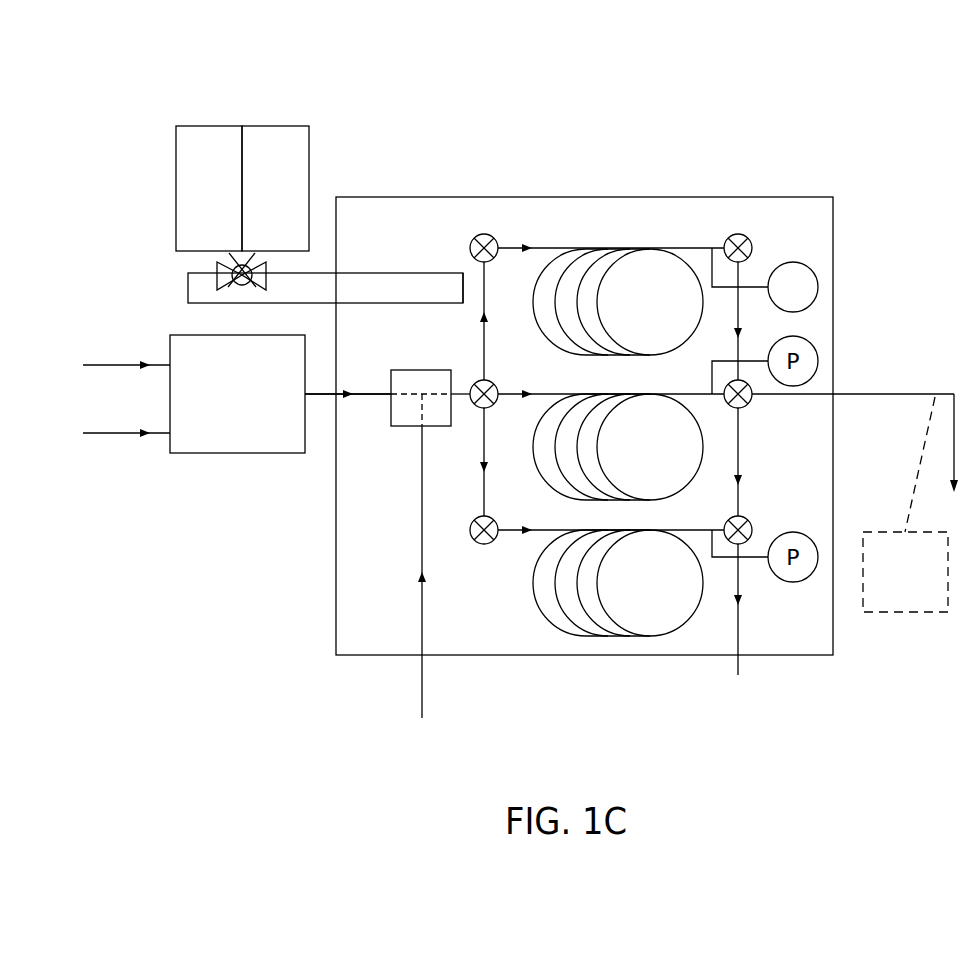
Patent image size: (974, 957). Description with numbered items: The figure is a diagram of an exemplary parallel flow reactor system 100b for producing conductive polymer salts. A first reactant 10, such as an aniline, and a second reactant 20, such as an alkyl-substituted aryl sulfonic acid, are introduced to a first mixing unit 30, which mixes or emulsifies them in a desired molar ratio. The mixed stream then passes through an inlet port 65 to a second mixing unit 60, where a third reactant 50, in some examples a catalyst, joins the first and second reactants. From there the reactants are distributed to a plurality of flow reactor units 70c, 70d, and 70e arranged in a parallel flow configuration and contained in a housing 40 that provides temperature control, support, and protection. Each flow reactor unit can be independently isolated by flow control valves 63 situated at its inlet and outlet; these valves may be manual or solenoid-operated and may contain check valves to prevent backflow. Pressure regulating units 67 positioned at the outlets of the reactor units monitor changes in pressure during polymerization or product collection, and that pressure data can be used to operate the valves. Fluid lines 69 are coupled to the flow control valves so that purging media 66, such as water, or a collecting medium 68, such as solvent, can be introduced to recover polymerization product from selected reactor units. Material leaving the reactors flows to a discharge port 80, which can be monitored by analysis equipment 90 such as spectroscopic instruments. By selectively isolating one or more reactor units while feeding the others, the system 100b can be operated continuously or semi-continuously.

The first reactant 10 is at (109, 363).
The second reactant 20 is at (110, 440).
The first mixing unit 30 is at (225, 405).
The housing 40 is at (400, 248).
The third reactant 50 is at (422, 690).
The second mixing unit 60 is at (411, 370).
The flow control valves 63 is at (477, 410).
The inlet port 65 is at (380, 398).
The purging media 66 is at (197, 195).
The pressure regulating unit 67 is at (788, 262).
The collecting medium 68 is at (262, 195).
The fluid lines 69 is at (461, 343).
The flow reactor unit 70c is at (680, 622).
The flow reactor unit 70d is at (670, 498).
The flow reactor unit 70e is at (652, 356).
The discharge port 80 is at (887, 393).
The analysis equipment 90 is at (895, 578).
The flow reactor system 100b is at (714, 147).